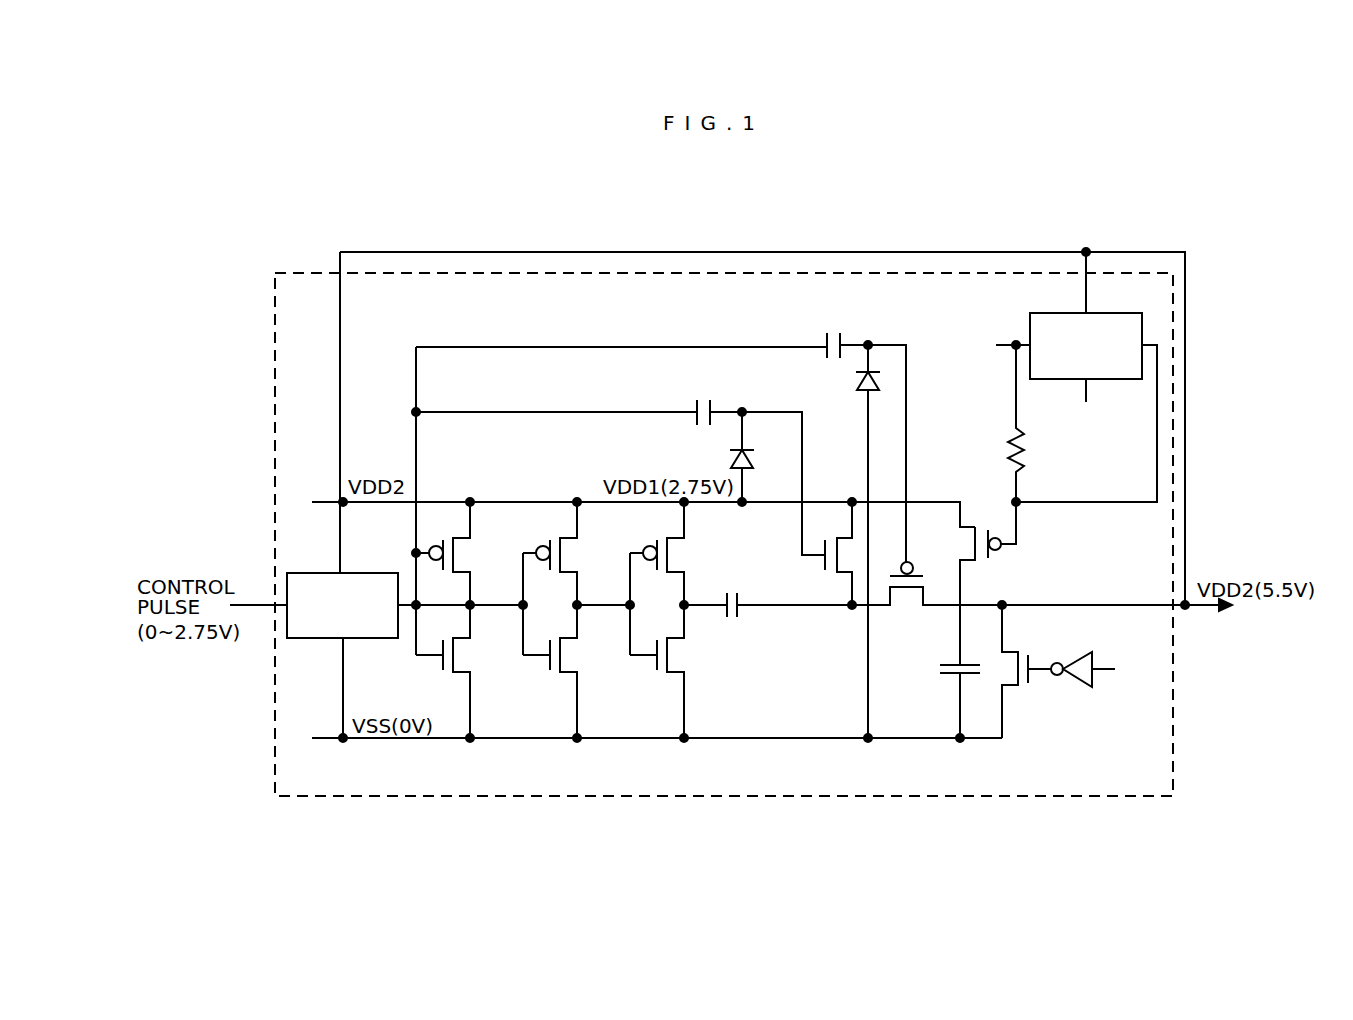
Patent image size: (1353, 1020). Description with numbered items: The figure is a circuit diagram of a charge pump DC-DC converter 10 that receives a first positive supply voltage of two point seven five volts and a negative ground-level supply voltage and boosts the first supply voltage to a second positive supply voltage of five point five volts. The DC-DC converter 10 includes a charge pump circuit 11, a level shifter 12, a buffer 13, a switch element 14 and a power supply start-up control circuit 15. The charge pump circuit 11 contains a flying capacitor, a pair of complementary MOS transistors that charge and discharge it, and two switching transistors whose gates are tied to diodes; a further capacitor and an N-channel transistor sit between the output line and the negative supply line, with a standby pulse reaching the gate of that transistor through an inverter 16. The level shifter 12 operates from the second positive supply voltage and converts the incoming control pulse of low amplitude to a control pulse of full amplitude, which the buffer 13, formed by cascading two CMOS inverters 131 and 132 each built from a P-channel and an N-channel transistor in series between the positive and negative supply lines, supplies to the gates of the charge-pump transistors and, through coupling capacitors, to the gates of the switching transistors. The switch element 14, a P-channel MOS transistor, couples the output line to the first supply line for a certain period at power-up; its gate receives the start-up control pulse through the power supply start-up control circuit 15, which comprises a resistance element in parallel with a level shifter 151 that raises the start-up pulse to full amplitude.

The DC-DC converter 10 is at (318, 233).
The charge pump circuit 11 is at (676, 667).
The level shifter 12 is at (320, 572).
The buffer 13 is at (518, 592).
The CMOS inverter 131 is at (470, 544).
The CMOS inverter 132 is at (574, 587).
The switch element 14 is at (980, 553).
The power supply start-up control circuit 15 is at (1059, 349).
The level shifter 151 is at (1113, 313).
The inverter 16 is at (1093, 652).